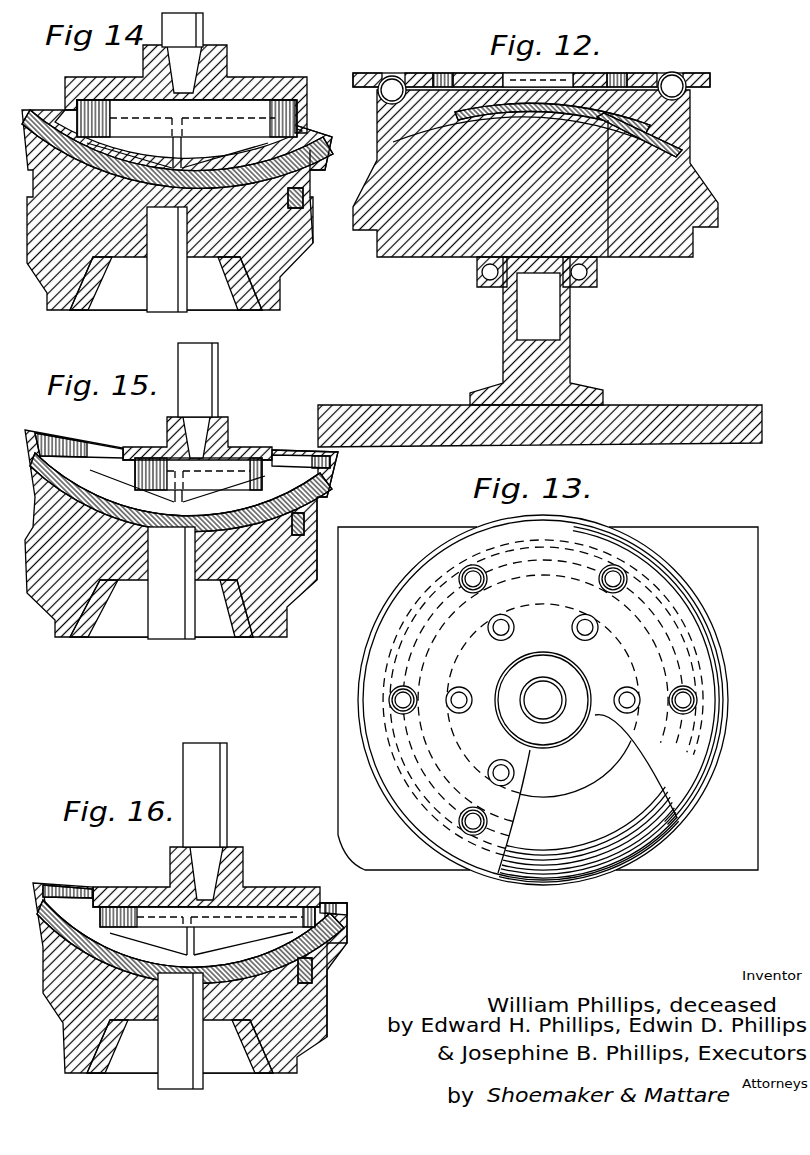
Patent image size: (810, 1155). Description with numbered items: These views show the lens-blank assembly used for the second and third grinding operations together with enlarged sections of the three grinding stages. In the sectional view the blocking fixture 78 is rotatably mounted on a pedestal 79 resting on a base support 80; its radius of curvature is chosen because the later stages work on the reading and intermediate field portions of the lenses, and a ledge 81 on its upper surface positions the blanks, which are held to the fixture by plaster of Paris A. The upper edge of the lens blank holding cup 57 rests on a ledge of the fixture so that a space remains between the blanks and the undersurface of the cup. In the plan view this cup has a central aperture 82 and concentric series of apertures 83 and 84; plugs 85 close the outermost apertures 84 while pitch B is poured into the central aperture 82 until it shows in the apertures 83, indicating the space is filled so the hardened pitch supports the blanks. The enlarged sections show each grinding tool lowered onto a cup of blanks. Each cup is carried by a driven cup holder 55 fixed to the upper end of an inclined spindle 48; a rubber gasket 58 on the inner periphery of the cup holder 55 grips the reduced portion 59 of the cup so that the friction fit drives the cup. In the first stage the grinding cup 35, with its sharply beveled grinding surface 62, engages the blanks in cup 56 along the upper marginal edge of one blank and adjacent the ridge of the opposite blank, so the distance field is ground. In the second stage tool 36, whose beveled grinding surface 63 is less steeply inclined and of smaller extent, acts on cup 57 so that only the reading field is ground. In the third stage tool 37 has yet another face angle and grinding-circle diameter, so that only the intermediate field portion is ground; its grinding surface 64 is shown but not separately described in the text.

In FIG. 14, the grinding cup tool 35 is at (272, 78).
In FIG. 15, the grinding tool 36 is at (255, 447).
In FIG. 16, the grinding tool 37 is at (311, 887).
In FIG. 14, the spindle 48 is at (160, 313).
In FIG. 15, the spindle 48 is at (160, 640).
In FIG. 16, the spindle 48 is at (172, 1090).
In FIG. 14, the cup holder 55 is at (290, 283).
In FIG. 15, the cup holder 55 is at (287, 622).
In FIG. 16, the cup holder 55 is at (322, 1037).
In FIG. 14, the lens blank holding cup 56 is at (326, 164).
In FIG. 15, the lens blank holding cup 57 is at (323, 498).
In FIG. 16, the lens blank holding cup 57 is at (346, 949).
In FIG. 12, the lens blank holding cup 57 is at (692, 147).
In FIG. 14, the rubber gasket 58 is at (304, 203).
In FIG. 15, the rubber gasket 58 is at (286, 540).
In FIG. 16, the rubber gasket 58 is at (313, 978).
In FIG. 14, the reduced portion 59 is at (291, 216).
In FIG. 15, the reduced portion 59 is at (318, 522).
In FIG. 16, the reduced portion 59 is at (340, 972).
In FIG. 14, the grinding surface 62 is at (76, 102).
In FIG. 15, the grinding surface 63 is at (134, 458).
In FIG. 16, the sleeve 64 is at (103, 908).
In FIG. 12, the blocking fixture 78 is at (718, 208).
In FIG. 13, the blocking fixture 78 is at (552, 882).
In FIG. 12, the pedestal 79 is at (571, 372).
In FIG. 12, the base support 80 is at (662, 405).
In FIG. 13, the base support 80 is at (708, 527).
In FIG. 12, the ledge 81 is at (423, 73).
In FIG. 13, the ledge 81 is at (598, 779).
In FIG. 12, the central aperture 82 is at (518, 84).
In FIG. 13, the central aperture 82 is at (530, 674).
In FIG. 12, the apertures 83 is at (445, 74).
In FIG. 13, the apertures 83 is at (588, 638).
In FIG. 12, the apertures 84 is at (398, 77).
In FIG. 13, the apertures 84 is at (603, 584).
In FIG. 12, the plugs 85 is at (385, 80).
In FIG. 13, the plugs 85 is at (608, 593).
In FIG. 12, the plaster of Paris A is at (607, 257).
In FIG. 14, the pitch B is at (325, 137).
In FIG. 15, the pitch B is at (330, 482).
In FIG. 16, the pitch B is at (348, 927).
In FIG. 12, the pitch B is at (693, 128).